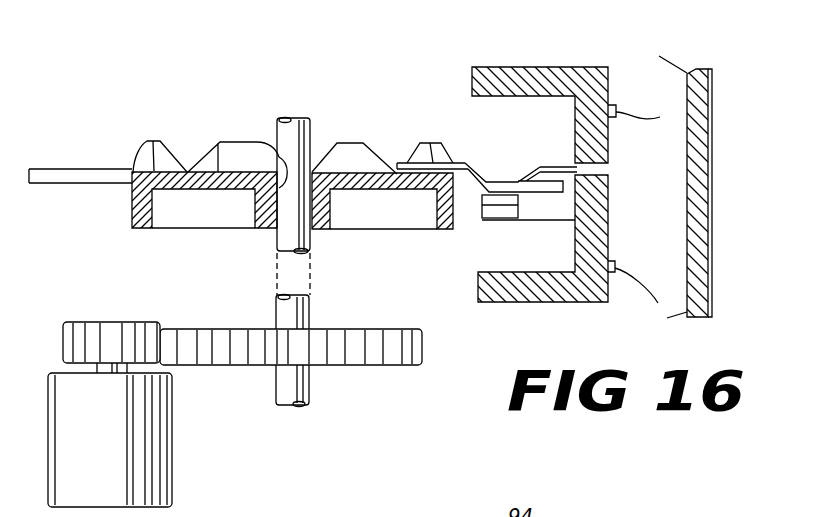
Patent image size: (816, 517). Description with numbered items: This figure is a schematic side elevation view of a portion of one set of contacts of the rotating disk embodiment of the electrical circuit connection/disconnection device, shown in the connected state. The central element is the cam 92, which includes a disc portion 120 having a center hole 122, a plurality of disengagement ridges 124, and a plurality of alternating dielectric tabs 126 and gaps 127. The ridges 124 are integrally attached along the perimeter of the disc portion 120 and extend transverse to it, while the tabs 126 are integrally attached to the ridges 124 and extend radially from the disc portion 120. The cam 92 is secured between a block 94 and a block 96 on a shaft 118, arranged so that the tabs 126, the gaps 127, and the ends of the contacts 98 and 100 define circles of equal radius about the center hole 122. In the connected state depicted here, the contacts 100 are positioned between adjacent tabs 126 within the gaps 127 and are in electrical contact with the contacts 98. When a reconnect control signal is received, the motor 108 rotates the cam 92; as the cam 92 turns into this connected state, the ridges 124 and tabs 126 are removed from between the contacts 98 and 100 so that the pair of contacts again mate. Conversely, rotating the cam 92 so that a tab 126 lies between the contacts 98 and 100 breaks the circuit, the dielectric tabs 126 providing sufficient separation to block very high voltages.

The cam 92 is at (134, 230).
The block 94 is at (548, 70).
The block 96 is at (530, 296).
The contact 98 is at (506, 206).
The contact 100 is at (478, 162).
The motor 108 is at (173, 435).
The shaft 118 is at (290, 118).
The disc portion 120 is at (192, 147).
The center hole 122 is at (189, 171).
The disengagement ridge 124 is at (148, 140).
The dielectric tab 126 is at (87, 169).
The gap 127 is at (398, 150).